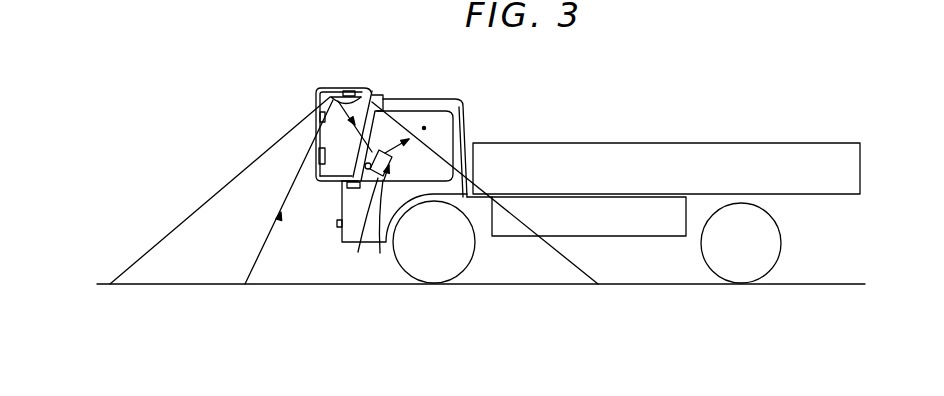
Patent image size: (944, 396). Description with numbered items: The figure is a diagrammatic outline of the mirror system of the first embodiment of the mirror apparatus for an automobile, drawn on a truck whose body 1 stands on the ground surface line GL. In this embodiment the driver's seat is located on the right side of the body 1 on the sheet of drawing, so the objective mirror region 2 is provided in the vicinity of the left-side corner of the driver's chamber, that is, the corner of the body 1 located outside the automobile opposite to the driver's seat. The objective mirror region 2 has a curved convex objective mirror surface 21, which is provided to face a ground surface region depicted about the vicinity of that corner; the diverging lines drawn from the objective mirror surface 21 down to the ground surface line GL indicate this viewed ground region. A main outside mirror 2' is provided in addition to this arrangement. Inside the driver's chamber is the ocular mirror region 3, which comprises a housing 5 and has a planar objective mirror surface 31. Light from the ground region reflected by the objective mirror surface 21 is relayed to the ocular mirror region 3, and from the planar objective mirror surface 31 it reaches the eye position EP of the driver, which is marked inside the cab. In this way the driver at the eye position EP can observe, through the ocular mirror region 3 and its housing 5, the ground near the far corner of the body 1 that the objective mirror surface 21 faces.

The body 1 is at (458, 101).
The objective mirror region 2 is at (347, 120).
The objective mirror surface 21 is at (313, 120).
The main outside mirror 2' is at (336, 196).
The ocular mirror region 3 is at (380, 229).
The planar objective mirror surface 31 is at (360, 226).
The housing 5 is at (391, 157).
The eye position EP is at (435, 129).
The ground surface line GL is at (484, 271).